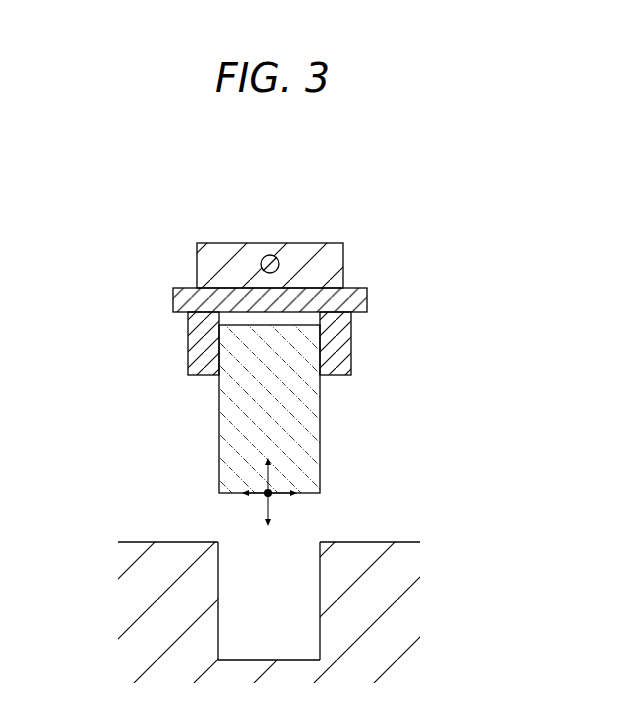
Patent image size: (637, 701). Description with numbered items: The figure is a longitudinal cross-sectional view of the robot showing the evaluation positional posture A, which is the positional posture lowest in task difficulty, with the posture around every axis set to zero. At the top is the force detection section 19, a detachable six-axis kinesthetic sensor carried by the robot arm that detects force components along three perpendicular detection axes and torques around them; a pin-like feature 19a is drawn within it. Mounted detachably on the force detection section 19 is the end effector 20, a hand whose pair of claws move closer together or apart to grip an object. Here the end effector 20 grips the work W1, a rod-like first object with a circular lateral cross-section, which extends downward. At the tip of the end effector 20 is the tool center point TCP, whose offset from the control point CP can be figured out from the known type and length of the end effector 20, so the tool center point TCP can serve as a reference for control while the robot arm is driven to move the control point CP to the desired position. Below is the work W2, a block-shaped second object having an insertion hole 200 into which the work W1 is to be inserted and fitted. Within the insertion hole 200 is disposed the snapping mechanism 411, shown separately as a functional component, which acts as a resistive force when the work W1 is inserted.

The evaluation positional posture A is at (204, 185).
The force detection section 19 is at (212, 268).
The pin 19a is at (279, 262).
The end effector 20 is at (200, 343).
The work W1 is at (280, 397).
The control point CP is at (272, 488).
The tool center point TCP is at (270, 494).
The work W2 is at (172, 552).
The insertion hole 200 is at (193, 622).
The snapping mechanism 411 is at (322, 598).